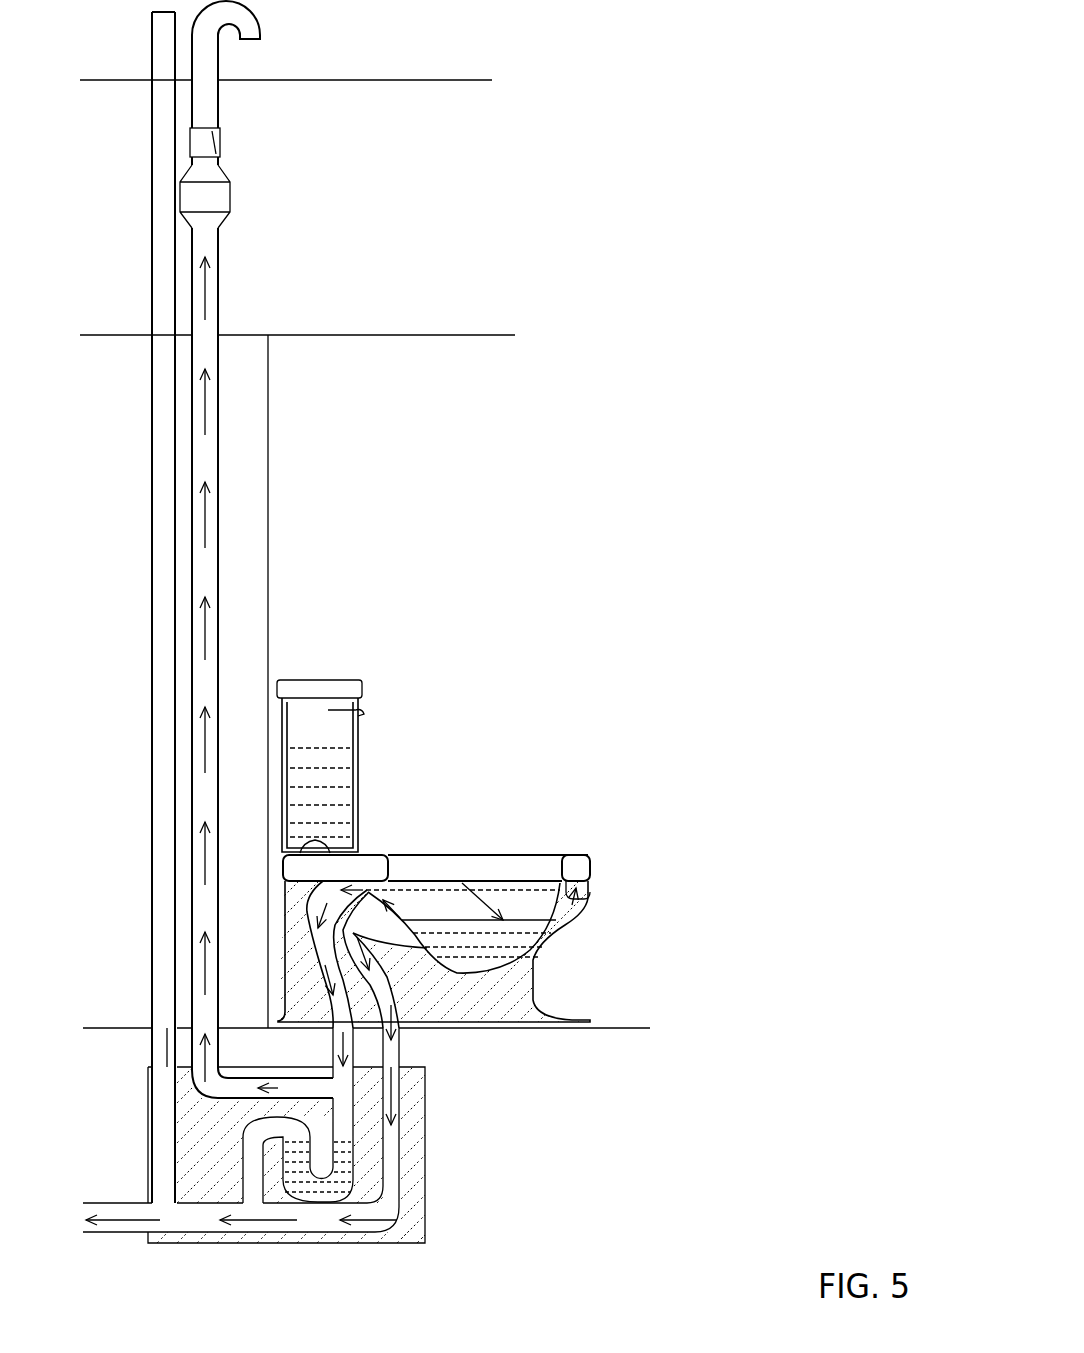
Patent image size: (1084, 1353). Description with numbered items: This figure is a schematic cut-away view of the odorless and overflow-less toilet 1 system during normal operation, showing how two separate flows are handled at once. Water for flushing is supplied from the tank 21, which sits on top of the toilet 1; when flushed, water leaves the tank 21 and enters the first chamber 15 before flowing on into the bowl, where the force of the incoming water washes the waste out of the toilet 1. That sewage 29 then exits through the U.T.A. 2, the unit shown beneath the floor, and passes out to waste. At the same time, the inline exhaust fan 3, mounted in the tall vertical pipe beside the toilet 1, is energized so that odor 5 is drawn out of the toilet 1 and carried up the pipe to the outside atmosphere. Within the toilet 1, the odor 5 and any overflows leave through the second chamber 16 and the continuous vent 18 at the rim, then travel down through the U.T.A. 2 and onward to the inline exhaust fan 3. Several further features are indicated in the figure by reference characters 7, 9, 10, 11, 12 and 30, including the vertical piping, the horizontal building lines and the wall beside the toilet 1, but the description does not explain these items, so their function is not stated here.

The toilet 1 is at (537, 953).
The U.T.A. 2 is at (430, 1108).
The inline exhaust fan 3 is at (234, 212).
The odor 5 is at (209, 513).
The drain pipe 7 is at (169, 448).
The pipe fitting 9 is at (224, 143).
The floor 10 is at (484, 1042).
The ceiling 11 is at (366, 330).
The roof 12 is at (357, 76).
The first chamber 15 is at (366, 867).
The second chamber 16 is at (578, 893).
The continuous vent 18 is at (556, 918).
The tank 21 is at (365, 770).
The sewage 29 is at (393, 1182).
The wall 30 is at (274, 358).